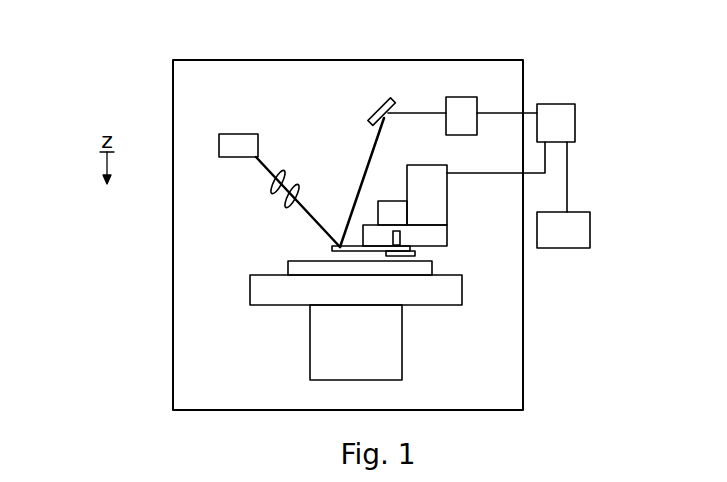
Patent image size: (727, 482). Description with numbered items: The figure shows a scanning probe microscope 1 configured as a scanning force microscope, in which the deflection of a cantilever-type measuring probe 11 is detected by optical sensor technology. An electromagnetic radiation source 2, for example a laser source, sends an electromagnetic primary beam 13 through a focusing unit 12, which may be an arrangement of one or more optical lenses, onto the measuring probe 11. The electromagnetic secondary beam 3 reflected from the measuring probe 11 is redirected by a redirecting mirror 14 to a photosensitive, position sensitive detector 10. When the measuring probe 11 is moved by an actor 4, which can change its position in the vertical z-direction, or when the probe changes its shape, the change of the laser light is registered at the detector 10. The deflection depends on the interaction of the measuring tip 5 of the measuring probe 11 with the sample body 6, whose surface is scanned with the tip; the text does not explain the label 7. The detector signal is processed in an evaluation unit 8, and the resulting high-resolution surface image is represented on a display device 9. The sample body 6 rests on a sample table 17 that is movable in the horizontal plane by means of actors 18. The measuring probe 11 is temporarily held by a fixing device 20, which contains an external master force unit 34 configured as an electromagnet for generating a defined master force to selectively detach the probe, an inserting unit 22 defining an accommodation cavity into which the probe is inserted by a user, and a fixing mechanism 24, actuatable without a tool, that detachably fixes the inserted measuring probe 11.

The scanning probe microscope 1 is at (122, 63).
The electromagnetic radiation source 2 is at (237, 141).
The electromagnetic primary beam 13 is at (270, 172).
The focusing unit 12 is at (290, 205).
The redirecting mirror 14 is at (377, 98).
The electromagnetic secondary beam 3 is at (374, 142).
The actor 4 is at (438, 165).
The external master force unit 34 is at (385, 201).
The position sensitive detector 10 is at (458, 97).
The evaluation unit 8 is at (555, 104).
The display device 9 is at (583, 212).
The fixing device 20 is at (488, 182).
The inserting unit 22 is at (375, 237).
The fixing mechanism 24 is at (402, 237).
The measuring tip 5 is at (337, 252).
The processing point 7 is at (345, 243).
The measuring probe 11 is at (340, 227).
The sample body 6 is at (288, 262).
The sample table 17 is at (250, 290).
The actors 18 is at (310, 350).